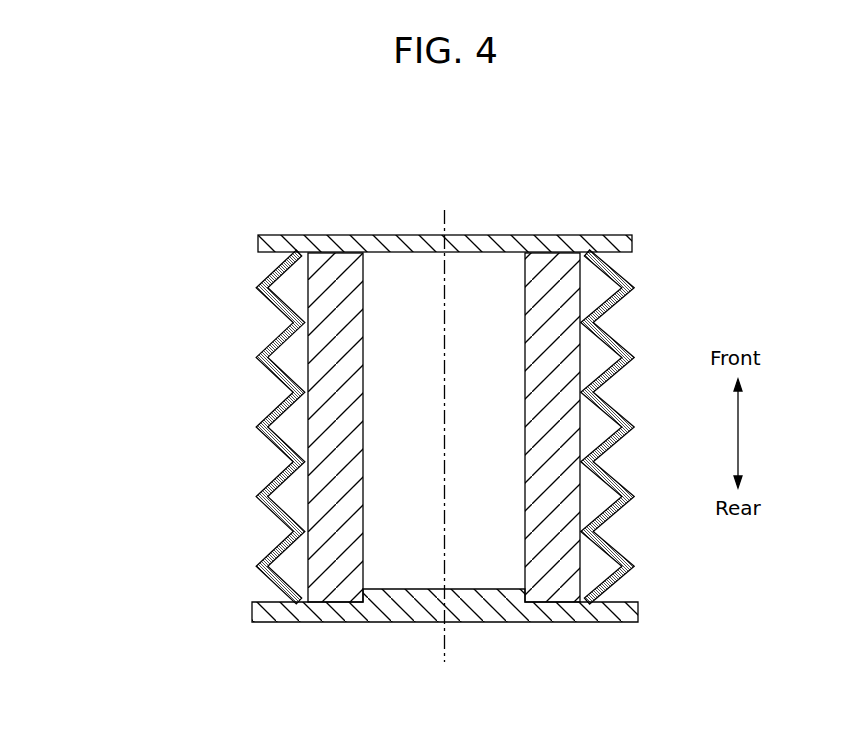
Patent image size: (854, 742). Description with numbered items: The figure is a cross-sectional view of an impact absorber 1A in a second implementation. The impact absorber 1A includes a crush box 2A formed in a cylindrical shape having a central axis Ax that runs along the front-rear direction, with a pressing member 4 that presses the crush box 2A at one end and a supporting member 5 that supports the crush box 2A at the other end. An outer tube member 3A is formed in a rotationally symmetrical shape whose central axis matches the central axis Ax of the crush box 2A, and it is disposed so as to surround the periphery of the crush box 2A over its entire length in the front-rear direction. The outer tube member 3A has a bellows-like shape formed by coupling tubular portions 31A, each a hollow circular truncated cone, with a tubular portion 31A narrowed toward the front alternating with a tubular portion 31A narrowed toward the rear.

The impact absorber 1A is at (458, 197).
The pressing member 4 is at (562, 234).
The supporting member 5 is at (375, 623).
The crush box 2A is at (600, 432).
The outer tube member 3A is at (123, 321).
The tubular portion 31A is at (280, 420).
The central axis Ax is at (445, 648).